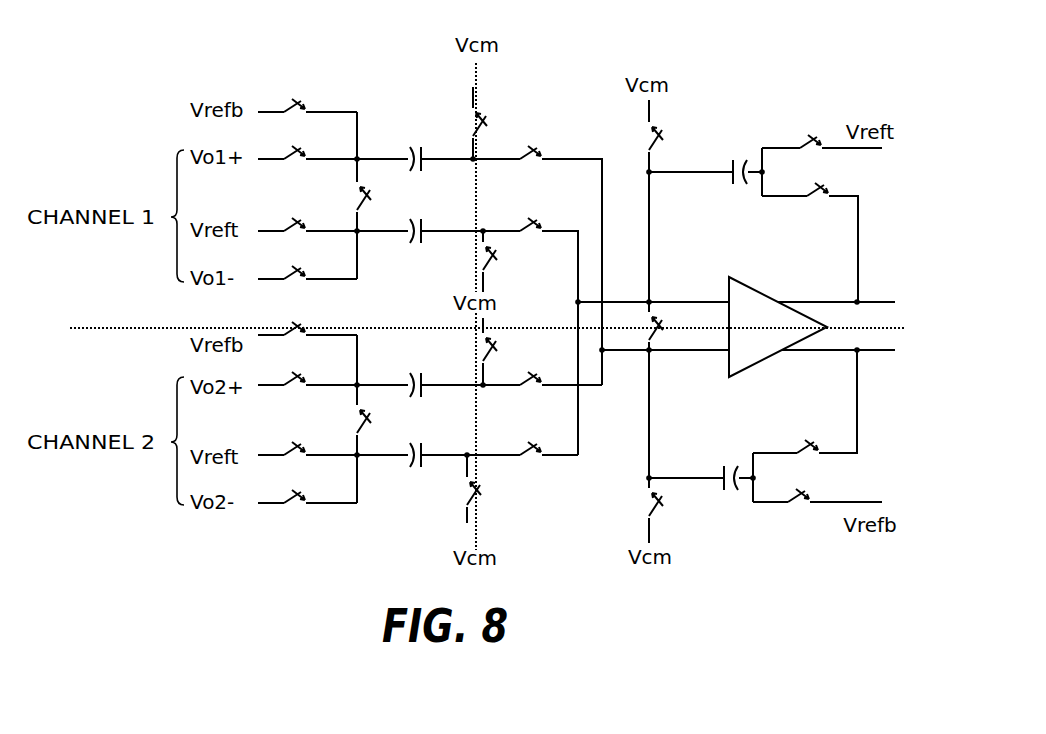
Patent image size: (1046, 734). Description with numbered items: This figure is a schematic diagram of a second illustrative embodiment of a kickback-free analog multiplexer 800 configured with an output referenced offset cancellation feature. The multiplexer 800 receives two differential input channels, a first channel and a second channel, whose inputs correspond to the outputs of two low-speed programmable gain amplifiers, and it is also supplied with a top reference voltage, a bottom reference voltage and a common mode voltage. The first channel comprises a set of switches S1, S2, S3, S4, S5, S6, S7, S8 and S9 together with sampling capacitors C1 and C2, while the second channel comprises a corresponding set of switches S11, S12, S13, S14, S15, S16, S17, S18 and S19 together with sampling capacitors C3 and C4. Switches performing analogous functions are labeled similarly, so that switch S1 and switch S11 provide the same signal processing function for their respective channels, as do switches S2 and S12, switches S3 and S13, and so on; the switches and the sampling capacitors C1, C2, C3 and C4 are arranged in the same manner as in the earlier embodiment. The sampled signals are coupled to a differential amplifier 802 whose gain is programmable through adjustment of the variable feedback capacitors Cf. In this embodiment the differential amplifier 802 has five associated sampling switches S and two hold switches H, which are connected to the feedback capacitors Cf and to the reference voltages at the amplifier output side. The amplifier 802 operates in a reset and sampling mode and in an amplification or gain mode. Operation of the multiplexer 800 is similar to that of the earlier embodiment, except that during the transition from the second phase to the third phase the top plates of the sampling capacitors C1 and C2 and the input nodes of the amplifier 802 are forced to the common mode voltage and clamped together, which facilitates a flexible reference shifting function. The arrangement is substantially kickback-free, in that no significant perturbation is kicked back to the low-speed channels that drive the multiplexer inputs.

The analog multiplexer 800 is at (786, 66).
The differential amplifier 802 is at (751, 288).
The switch S1 is at (292, 139).
The switch S2 is at (292, 260).
The switch S3 is at (492, 123).
The switch S4 is at (503, 261).
The switch S5 is at (531, 137).
The switch S6 is at (531, 209).
The switch S7 is at (292, 92).
The switch S8 is at (292, 211).
The switch S9 is at (381, 197).
The switch S11 is at (295, 364).
The switch S12 is at (295, 484).
The switch S13 is at (513, 351).
The switch S14 is at (497, 489).
The switch S15 is at (532, 391).
The switch S16 is at (532, 462).
The switch S17 is at (295, 315).
The switch S18 is at (295, 435).
The switch S19 is at (386, 424).
The sampling capacitor C1 is at (413, 145).
The sampling capacitor C2 is at (413, 245).
The sampling capacitor C3 is at (415, 369).
The sampling capacitor C4 is at (415, 471).
The variable feedback capacitor Cf is at (734, 326).
The sampling switch S is at (735, 318).
The hold switch H is at (807, 309).